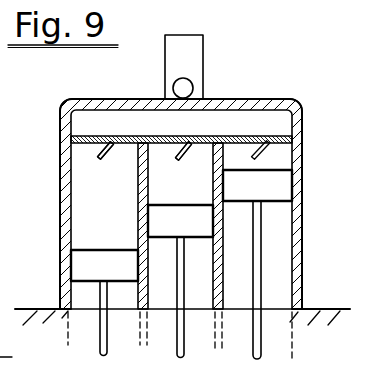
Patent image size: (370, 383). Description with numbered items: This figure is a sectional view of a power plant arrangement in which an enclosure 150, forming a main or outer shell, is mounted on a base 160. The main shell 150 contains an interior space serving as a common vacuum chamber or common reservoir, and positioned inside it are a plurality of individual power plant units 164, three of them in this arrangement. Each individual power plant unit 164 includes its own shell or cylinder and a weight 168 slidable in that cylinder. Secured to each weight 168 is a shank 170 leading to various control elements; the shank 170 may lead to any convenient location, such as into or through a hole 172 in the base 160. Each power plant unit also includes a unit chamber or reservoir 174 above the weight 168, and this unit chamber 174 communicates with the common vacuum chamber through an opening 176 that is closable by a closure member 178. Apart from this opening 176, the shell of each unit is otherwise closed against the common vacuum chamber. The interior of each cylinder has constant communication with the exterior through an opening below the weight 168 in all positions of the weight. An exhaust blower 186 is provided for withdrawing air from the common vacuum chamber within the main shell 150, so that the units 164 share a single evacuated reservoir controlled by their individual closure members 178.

The enclosure 150 is at (62, 193).
The base 160 is at (41, 322).
The individual power plant unit 164 is at (207, 131).
The weight 168 is at (100, 258).
The shank 170 is at (250, 345).
The hole 172 is at (130, 329).
The unit chamber 174 is at (83, 171).
The opening 176 is at (173, 140).
The closure member 178 is at (172, 158).
The exhaust blower 186 is at (205, 58).